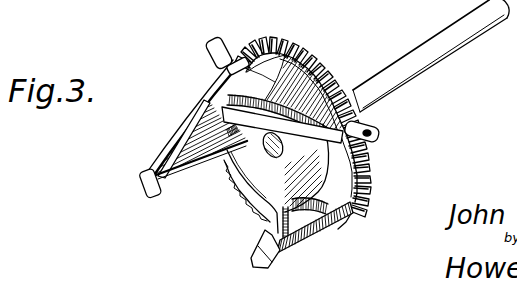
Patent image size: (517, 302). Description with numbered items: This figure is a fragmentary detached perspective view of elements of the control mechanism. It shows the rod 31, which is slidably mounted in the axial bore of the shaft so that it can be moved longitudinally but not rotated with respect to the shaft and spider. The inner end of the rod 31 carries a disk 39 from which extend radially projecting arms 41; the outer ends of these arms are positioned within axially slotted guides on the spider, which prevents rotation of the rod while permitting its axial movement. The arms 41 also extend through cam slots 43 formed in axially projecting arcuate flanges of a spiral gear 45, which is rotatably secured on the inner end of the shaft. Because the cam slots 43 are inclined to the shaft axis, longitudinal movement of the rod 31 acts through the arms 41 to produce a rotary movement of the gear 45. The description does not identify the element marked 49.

The rod 31 is at (430, 44).
The disk 39 is at (262, 180).
The radially projecting arms 41 is at (207, 50).
The cam slots 43 is at (168, 143).
The spiral gear 45 is at (293, 47).
The curved arm 49 is at (196, 101).